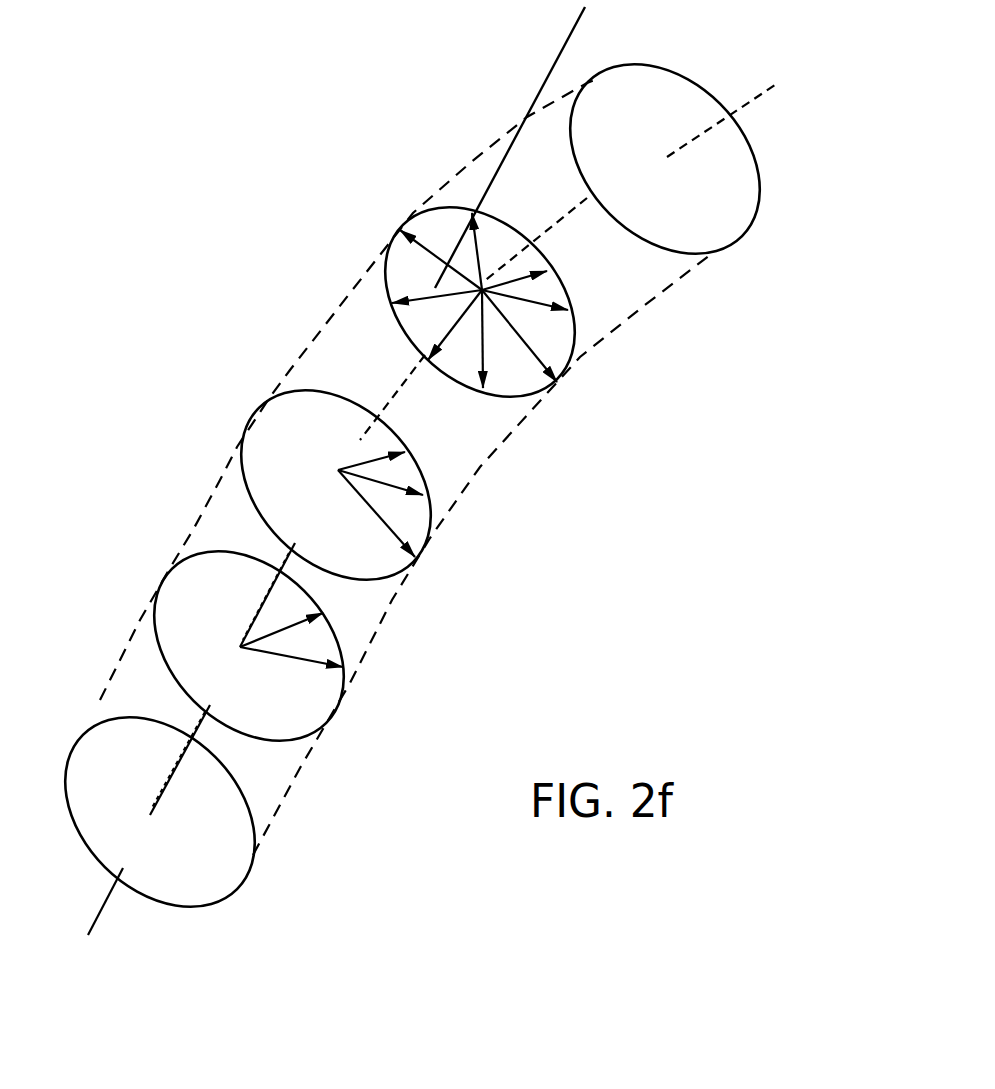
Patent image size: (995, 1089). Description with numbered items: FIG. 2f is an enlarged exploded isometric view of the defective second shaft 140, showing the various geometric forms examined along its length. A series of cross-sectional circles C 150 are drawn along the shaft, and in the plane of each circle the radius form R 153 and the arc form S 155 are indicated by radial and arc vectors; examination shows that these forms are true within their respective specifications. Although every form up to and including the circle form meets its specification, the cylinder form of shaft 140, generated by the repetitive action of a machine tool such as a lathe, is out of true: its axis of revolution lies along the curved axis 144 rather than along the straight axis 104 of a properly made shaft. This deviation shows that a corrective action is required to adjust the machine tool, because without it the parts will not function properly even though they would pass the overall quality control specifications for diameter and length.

The axis of revolution 104 is at (568, 43).
The second shaft 140 is at (100, 700).
The axis of revolution 144 is at (753, 100).
The circle C 150 is at (760, 207).
The radius form R 153 is at (331, 549).
The arc form S 155 is at (415, 215).